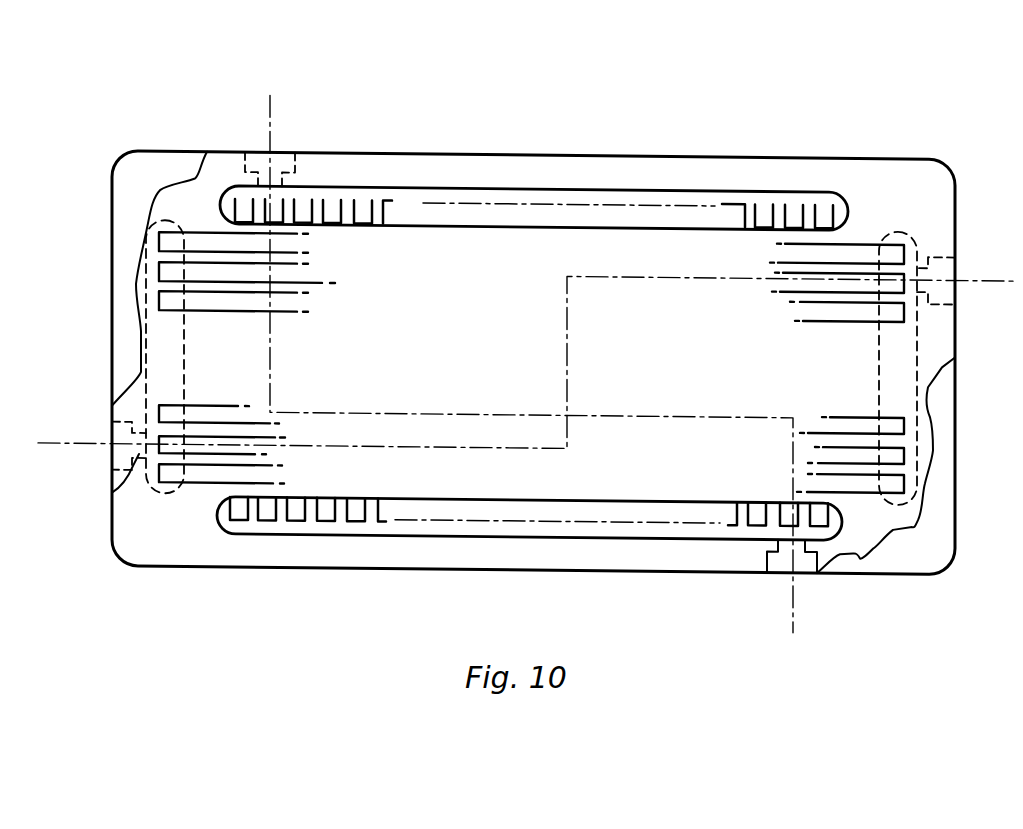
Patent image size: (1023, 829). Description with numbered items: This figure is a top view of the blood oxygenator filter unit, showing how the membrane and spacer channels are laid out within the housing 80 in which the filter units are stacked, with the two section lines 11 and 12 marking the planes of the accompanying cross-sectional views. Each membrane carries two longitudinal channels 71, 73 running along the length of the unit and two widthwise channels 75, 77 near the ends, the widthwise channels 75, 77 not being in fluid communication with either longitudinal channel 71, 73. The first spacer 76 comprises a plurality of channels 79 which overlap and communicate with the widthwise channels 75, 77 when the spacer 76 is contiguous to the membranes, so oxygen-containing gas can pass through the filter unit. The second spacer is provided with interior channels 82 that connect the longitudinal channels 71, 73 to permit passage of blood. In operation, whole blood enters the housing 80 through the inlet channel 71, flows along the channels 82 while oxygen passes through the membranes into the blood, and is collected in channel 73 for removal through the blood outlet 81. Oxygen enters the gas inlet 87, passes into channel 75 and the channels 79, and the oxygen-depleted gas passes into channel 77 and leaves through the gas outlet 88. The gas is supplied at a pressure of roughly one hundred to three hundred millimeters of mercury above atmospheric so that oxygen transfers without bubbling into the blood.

The section line XI-XI 11 is at (312, 105).
The section line XII-XII 12 is at (52, 411).
The longitudinal channel 71 is at (296, 176).
The longitudinal channel 73 is at (563, 500).
The widthwise channel 75 is at (917, 474).
The first spacer 76 is at (938, 168).
The widthwise channel 77 is at (146, 338).
The channels of first spacer 79 is at (159, 275).
The housing 80 is at (130, 166).
The blood outlet 81 is at (768, 549).
The interior channels 82 is at (360, 202).
The gas inlet 87 is at (928, 253).
The gas outlet 88 is at (112, 497).